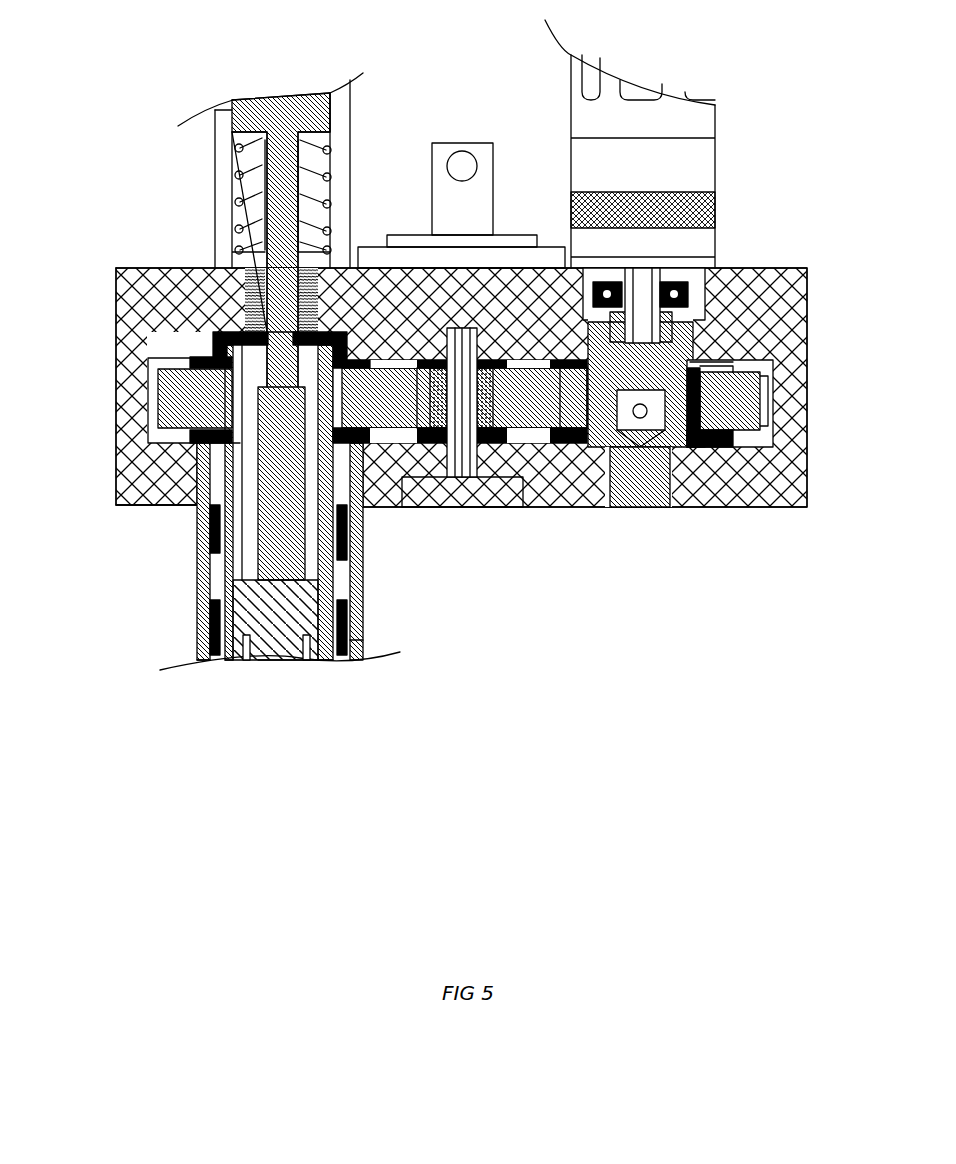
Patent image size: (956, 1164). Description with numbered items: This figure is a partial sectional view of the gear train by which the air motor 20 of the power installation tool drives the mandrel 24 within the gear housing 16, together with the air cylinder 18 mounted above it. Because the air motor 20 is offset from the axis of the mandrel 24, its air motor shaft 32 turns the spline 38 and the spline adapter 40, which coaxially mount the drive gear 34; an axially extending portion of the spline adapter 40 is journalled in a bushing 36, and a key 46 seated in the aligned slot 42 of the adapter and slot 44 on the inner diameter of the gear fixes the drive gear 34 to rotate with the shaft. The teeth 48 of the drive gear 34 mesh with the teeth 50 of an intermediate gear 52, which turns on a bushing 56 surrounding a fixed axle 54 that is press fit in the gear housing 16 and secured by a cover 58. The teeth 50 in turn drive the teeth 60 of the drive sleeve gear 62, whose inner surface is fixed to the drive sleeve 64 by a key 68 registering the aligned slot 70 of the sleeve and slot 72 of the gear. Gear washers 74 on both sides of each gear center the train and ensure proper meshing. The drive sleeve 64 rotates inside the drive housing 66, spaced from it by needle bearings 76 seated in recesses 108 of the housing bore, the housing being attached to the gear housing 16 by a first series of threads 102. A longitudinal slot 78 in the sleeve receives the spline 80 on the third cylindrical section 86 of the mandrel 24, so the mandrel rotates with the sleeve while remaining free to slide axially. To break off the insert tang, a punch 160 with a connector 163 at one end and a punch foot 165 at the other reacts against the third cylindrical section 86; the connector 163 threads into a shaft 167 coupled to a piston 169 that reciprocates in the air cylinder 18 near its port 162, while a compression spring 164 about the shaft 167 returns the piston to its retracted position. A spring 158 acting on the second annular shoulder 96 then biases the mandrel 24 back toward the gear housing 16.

The gear housing 16 is at (812, 283).
The air cylinder 18 is at (212, 164).
The air motor 20 is at (721, 165).
The mandrel 24 is at (292, 668).
The air motor shaft 32 is at (640, 292).
The drive gear 34 is at (752, 378).
The bushing 36 is at (670, 455).
The spline 38 is at (728, 330).
The spline adapter 40 is at (637, 510).
The slot 42 is at (727, 470).
The slot 44 is at (703, 408).
The key 46 is at (693, 365).
The teeth 48 is at (757, 410).
The teeth 50 is at (560, 445).
The intermediate gear 52 is at (587, 470).
The fixed axle 54 is at (462, 470).
The bushing 56 is at (505, 445).
The cover 58 is at (443, 442).
The teeth 60 is at (177, 383).
The drive sleeve gear 62 is at (175, 410).
The drive sleeve 64 is at (325, 658).
The drive housing 66 is at (372, 584).
The key 68 is at (378, 370).
The slot 70 is at (340, 345).
The slot 72 is at (440, 280).
The gear washers 74 is at (432, 452).
The needle bearing 76 is at (205, 538).
The longitudinal slot 78 is at (235, 653).
The spline 80 is at (198, 652).
The third cylindrical section 86 is at (368, 642).
The second annular shoulder 96 is at (322, 660).
The first series of threads 102 is at (197, 505).
The recesses 108 is at (258, 562).
The spring 158 is at (248, 660).
The punch 160 is at (285, 545).
The port 162 is at (140, 271).
The connector 163 is at (193, 362).
The compression spring 164 is at (326, 165).
The punch foot 165 is at (215, 580).
The shaft 167 is at (277, 222).
The piston 169 is at (332, 100).